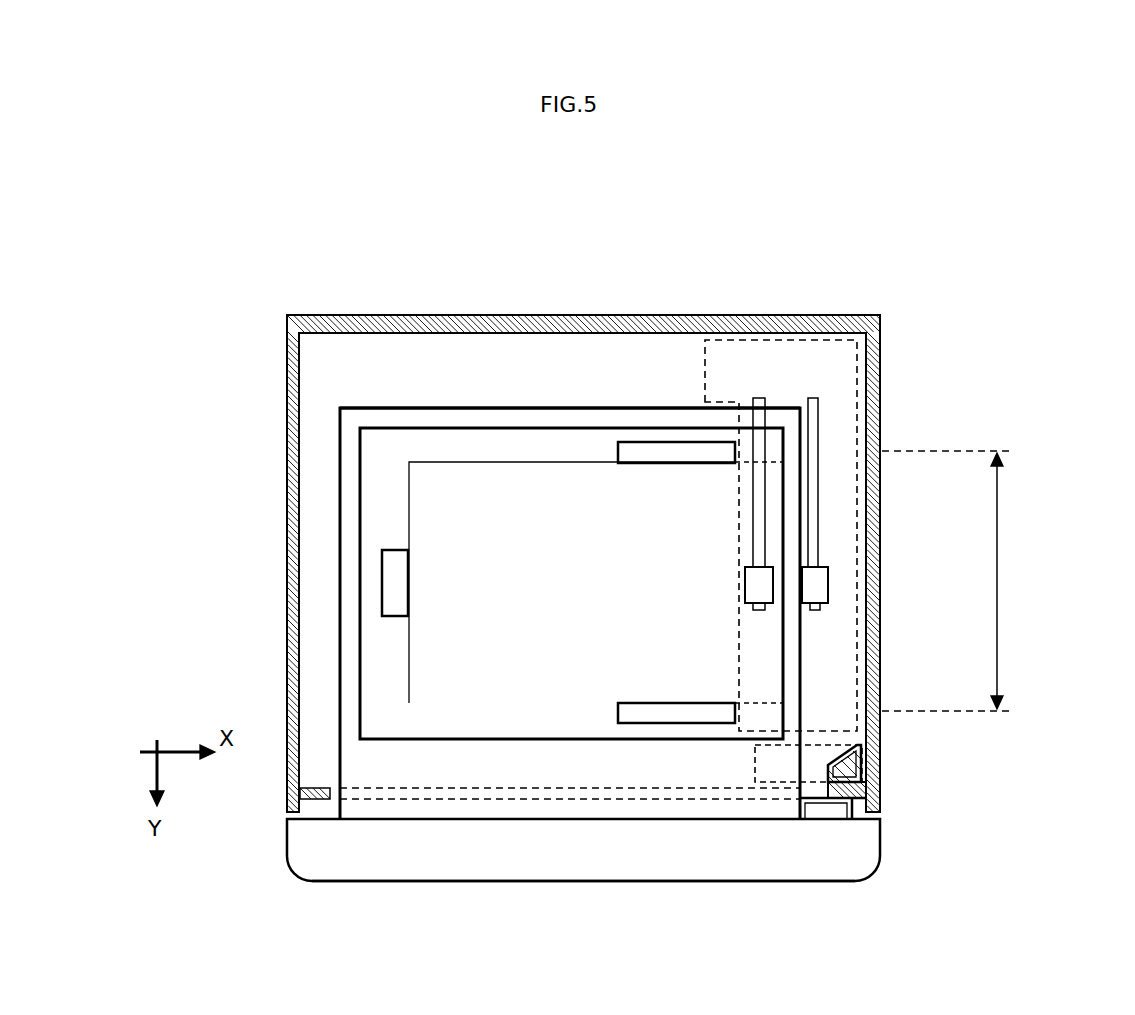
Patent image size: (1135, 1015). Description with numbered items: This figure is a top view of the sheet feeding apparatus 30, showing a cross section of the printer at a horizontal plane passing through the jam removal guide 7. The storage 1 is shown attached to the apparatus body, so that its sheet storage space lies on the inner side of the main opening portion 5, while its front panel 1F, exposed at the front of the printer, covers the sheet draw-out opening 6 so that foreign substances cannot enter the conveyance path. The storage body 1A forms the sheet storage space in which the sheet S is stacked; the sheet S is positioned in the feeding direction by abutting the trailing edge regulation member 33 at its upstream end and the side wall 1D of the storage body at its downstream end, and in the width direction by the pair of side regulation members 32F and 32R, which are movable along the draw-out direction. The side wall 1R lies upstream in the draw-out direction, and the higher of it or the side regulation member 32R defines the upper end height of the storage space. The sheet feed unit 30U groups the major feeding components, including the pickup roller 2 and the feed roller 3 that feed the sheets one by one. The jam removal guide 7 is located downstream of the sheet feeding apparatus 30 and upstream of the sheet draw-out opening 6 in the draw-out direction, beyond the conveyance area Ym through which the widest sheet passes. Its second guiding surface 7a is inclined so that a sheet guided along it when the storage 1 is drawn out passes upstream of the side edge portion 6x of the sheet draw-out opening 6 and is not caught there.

The sheet feeding apparatus 30 is at (538, 275).
The storage 1 is at (284, 881).
The front panel 1F is at (397, 883).
The storage body 1A is at (350, 648).
The side wall 1R is at (443, 405).
The side wall 1D is at (792, 648).
The sheet S is at (470, 560).
The sheet feed unit 30U is at (806, 341).
The side regulation member 32R is at (654, 448).
The side regulation member 32F is at (668, 722).
The trailing edge regulation member 33 is at (392, 582).
The pickup roller 2 is at (763, 576).
The feed roller 3 is at (812, 582).
The main opening portion 5 is at (552, 797).
The jam removal guide 7 is at (880, 781).
The second guiding surface 7a is at (850, 765).
The side edge portion 6x is at (820, 792).
The sheet draw-out opening 6 is at (806, 800).
The conveyance area Ym is at (961, 581).